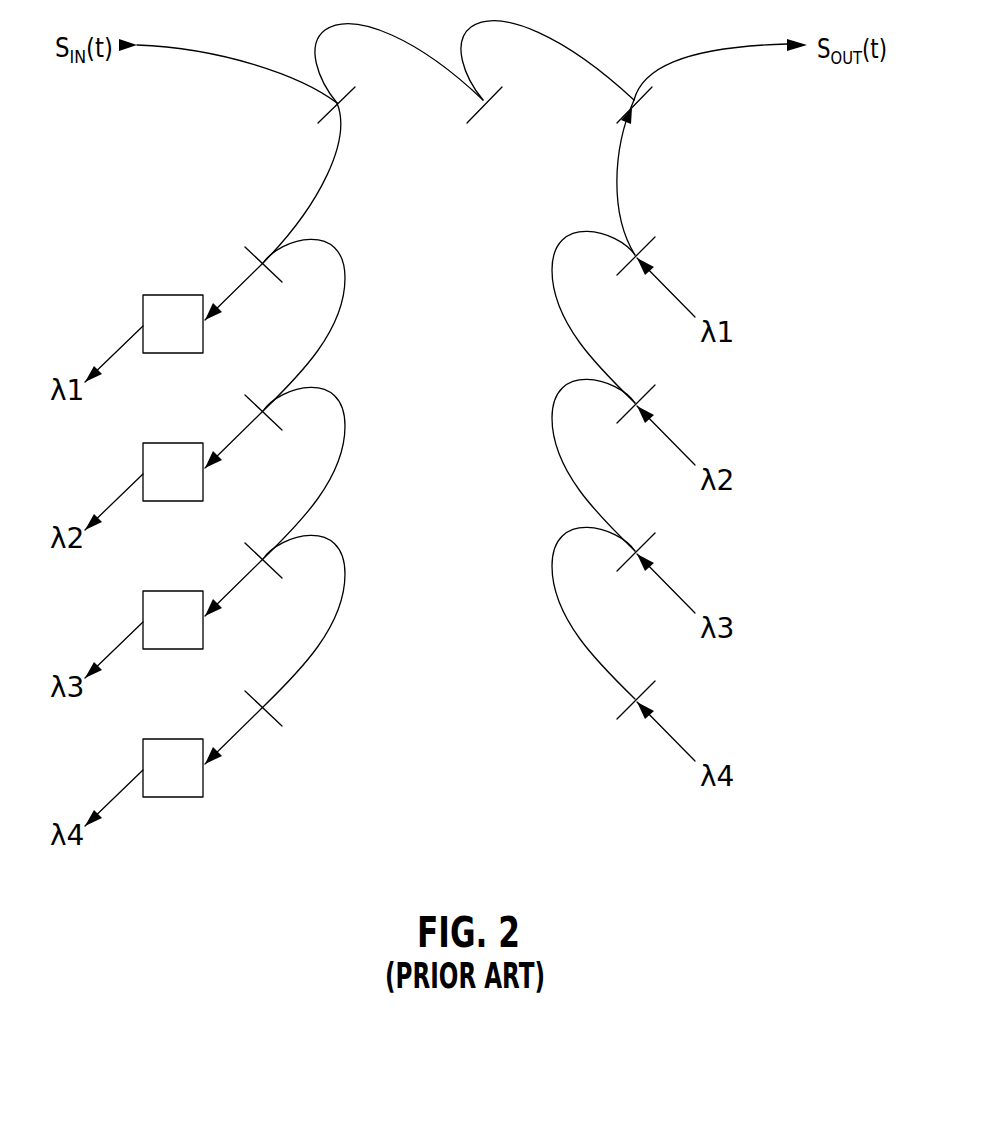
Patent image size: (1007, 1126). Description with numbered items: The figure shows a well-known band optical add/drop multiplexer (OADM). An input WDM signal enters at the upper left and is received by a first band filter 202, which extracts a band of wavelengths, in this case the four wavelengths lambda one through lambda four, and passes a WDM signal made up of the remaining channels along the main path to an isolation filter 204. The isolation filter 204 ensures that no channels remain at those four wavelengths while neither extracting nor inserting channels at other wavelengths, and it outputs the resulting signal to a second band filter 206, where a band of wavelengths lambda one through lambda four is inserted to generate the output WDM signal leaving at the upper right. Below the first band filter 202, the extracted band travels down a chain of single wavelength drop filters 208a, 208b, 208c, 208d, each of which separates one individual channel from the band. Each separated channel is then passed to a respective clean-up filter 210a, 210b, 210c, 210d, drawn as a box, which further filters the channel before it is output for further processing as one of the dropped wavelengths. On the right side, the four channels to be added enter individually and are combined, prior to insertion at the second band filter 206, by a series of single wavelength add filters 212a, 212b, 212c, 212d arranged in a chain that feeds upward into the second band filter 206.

The first band filter 202 is at (348, 92).
The isolation filter 204 is at (494, 92).
The second band filter 206 is at (644, 92).
The single wavelength drop filter 208a is at (252, 250).
The single wavelength drop filter 208b is at (252, 398).
The single wavelength drop filter 208c is at (252, 546).
The single wavelength drop filter 208d is at (252, 694).
The clean-up filter 210a is at (163, 295).
The clean-up filter 210b is at (163, 443).
The clean-up filter 210c is at (163, 591).
The clean-up filter 210d is at (163, 739).
The single wavelength add filter 212a is at (647, 248).
The single wavelength add filter 212b is at (647, 396).
The single wavelength add filter 212c is at (647, 544).
The single wavelength add filter 212d is at (647, 692).